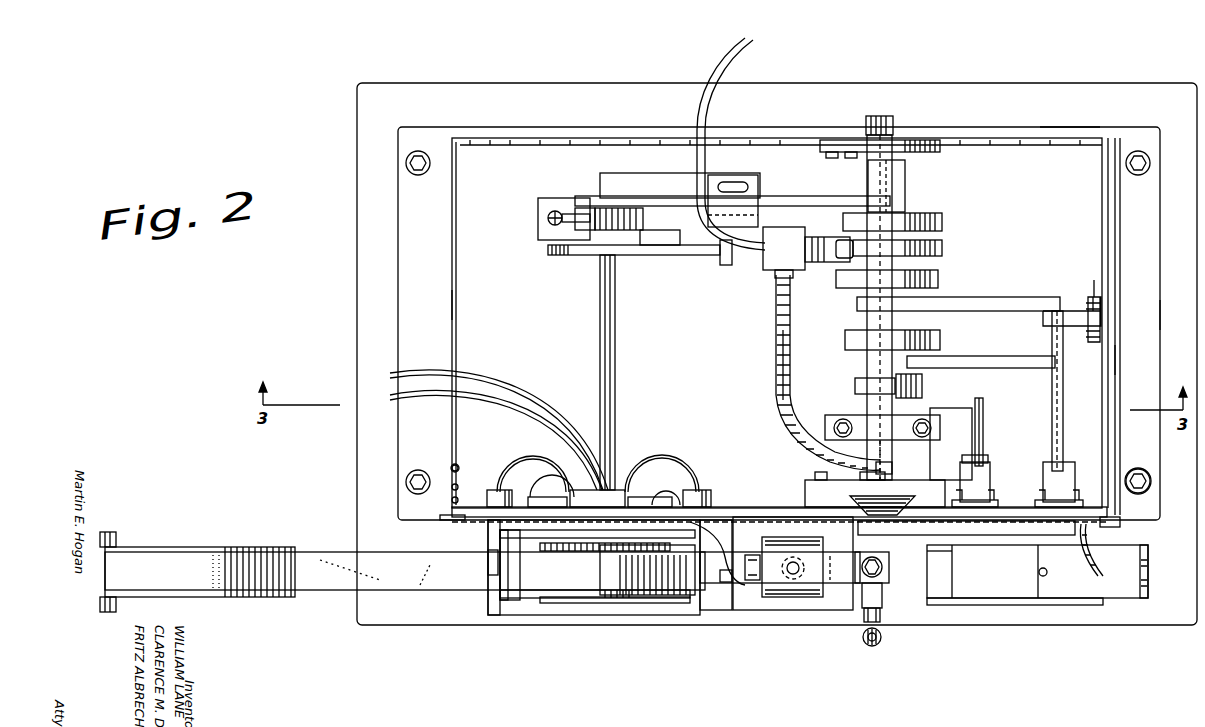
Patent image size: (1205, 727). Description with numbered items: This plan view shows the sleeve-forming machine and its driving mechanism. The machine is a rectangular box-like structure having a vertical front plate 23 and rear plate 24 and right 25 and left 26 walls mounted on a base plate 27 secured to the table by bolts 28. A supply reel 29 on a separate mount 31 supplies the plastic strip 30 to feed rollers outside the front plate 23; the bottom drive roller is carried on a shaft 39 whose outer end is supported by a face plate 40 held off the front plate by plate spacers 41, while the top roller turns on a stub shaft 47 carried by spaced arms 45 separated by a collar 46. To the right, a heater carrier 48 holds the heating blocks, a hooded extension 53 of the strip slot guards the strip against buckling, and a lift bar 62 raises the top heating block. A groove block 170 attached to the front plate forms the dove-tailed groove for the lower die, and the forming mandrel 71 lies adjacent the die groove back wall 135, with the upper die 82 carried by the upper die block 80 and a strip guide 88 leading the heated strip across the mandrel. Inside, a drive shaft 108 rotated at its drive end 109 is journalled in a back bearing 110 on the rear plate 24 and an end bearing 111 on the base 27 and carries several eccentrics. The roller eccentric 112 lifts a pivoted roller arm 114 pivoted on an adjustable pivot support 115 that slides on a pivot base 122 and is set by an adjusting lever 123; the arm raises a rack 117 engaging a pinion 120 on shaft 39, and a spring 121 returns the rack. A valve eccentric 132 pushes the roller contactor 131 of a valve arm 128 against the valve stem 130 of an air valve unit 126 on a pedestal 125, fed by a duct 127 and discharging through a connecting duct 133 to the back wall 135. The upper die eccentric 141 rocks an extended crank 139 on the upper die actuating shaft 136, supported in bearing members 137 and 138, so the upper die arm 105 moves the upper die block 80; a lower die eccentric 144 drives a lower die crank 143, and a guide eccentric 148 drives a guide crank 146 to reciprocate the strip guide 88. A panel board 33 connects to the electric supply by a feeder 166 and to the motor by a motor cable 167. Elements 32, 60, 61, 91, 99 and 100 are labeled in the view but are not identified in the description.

The front plate 23 is at (1100, 526).
The rear plate 24 is at (1048, 119).
The right wall 25 is at (1108, 360).
The left wall 26 is at (456, 300).
The base plate 27 is at (1150, 318).
The bolts 28 is at (1135, 470).
The supply reel 29 is at (240, 592).
The strip 30 is at (345, 590).
The mount 31 is at (115, 535).
The screw 32 is at (448, 477).
The panel board 33 is at (458, 517).
The shaft 39 is at (616, 350).
The face plate 40 is at (675, 603).
The plate spacers 41 is at (488, 598).
The arms 45 is at (565, 600).
The collar 46 is at (502, 600).
The stub shaft 47 is at (608, 598).
The heater carrier 48 is at (780, 598).
The hooded extension 53 is at (705, 612).
The lever 60 is at (795, 575).
The pin 61 is at (745, 580).
The lift bar 62 is at (835, 577).
The mandrel 71 is at (880, 598).
The upper die block 80 is at (884, 565).
The upper die 82 is at (882, 582).
The strip guide 88 is at (998, 582).
The lead wire 91 is at (1118, 576).
The roller pin 99 is at (870, 638).
The roller 100 is at (880, 642).
The upper die arm 105 is at (1020, 536).
The drive shaft 108 is at (895, 172).
The drive end 109 is at (878, 118).
The back bearing 110 is at (900, 142).
The end bearing 111 is at (905, 441).
The roller actuating eccentric 112 is at (915, 215).
The pivoted roller arm 114 is at (780, 198).
The pivot support 115 is at (718, 185).
The rack 117 is at (578, 210).
The pinion 120 is at (597, 210).
The spring 121 is at (538, 218).
The pivot base 122 is at (640, 170).
The adjusting lever 123 is at (552, 256).
The pedestal 125 is at (985, 460).
The air valve unit 126 is at (772, 260).
The duct 127 is at (735, 68).
The valve arm 128 is at (775, 300).
The valve stem 130 is at (858, 285).
The roller contactor 131 is at (832, 265).
The valve eccentric 132 is at (940, 250).
The connecting duct 133 is at (776, 406).
The die groove back wall 135 is at (960, 482).
The upper die actuating shaft 136 is at (1053, 418).
The bearing member 137 is at (1041, 494).
The bearing member 138 is at (1082, 302).
The crank 139 is at (1008, 293).
The upper die eccentric 141 is at (935, 280).
The lower die crank 143 is at (988, 362).
The lower die actuating eccentric 144 is at (940, 340).
The guide crank 146 is at (978, 400).
The guide eccentric 148 is at (856, 386).
The feeder 166 is at (390, 405).
The motor cable 167 is at (390, 378).
The groove block 170 is at (806, 486).